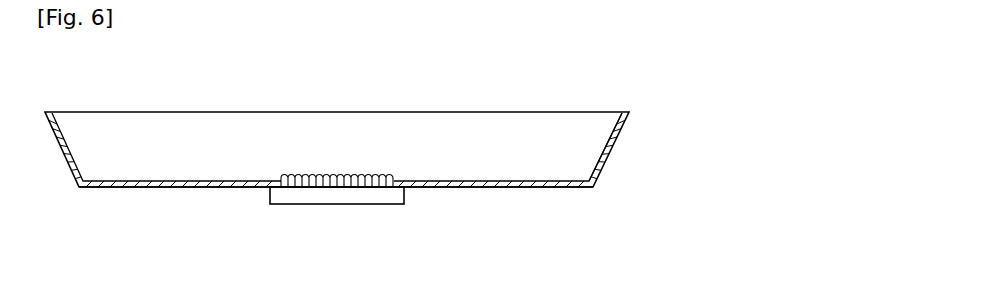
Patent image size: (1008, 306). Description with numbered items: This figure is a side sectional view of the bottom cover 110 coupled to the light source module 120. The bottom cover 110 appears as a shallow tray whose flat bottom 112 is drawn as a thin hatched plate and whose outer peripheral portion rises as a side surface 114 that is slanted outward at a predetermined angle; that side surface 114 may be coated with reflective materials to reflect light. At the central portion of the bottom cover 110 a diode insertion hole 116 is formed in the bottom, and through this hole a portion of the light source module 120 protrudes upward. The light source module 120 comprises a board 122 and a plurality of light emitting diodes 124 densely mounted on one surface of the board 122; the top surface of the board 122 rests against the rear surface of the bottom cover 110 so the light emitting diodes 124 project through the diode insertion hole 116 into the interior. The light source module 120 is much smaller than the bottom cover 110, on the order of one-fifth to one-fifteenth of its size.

The bottom cover 110 is at (605, 163).
The bottom plate 112 is at (183, 180).
The side surface 114 is at (607, 145).
The diode insertion hole 116 is at (281, 187).
The light source module 120 is at (397, 219).
The board 122 is at (345, 196).
The light emitting diodes 124 is at (384, 175).